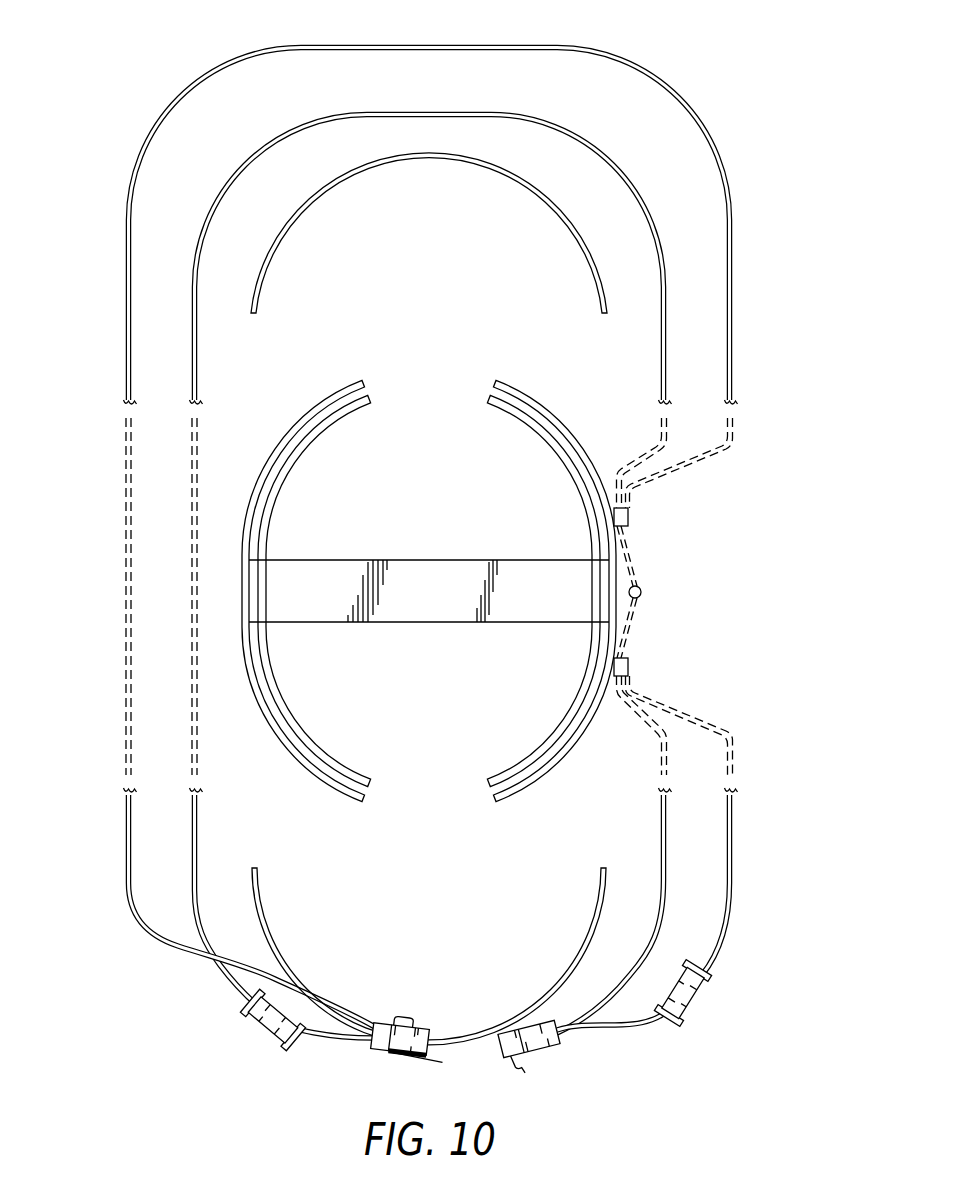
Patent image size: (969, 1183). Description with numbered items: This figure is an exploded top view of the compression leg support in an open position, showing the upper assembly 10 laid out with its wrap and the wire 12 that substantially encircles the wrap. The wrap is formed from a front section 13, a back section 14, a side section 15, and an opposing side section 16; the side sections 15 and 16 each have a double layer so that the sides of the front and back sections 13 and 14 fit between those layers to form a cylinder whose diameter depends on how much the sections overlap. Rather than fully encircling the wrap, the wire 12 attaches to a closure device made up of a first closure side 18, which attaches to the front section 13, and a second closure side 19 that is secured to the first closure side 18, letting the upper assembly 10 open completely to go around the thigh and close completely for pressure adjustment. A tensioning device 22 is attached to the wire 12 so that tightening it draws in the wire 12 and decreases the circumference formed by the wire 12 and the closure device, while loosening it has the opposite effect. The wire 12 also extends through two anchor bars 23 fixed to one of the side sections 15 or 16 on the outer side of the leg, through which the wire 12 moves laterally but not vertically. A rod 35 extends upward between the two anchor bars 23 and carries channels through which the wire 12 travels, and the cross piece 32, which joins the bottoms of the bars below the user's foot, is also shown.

The upper assembly 10 is at (117, 54).
The wire 12 is at (742, 852).
The front section 13 is at (280, 945).
The back section 14 is at (305, 205).
The side section 15 is at (558, 448).
The opposing side section 16 is at (300, 448).
The first closure side 18 is at (367, 1047).
The second closure side 19 is at (523, 1047).
The tensioning device 22 is at (257, 1032).
The anchor bar 23 is at (628, 516).
The cross piece 32 is at (453, 604).
The rod 35 is at (641, 594).